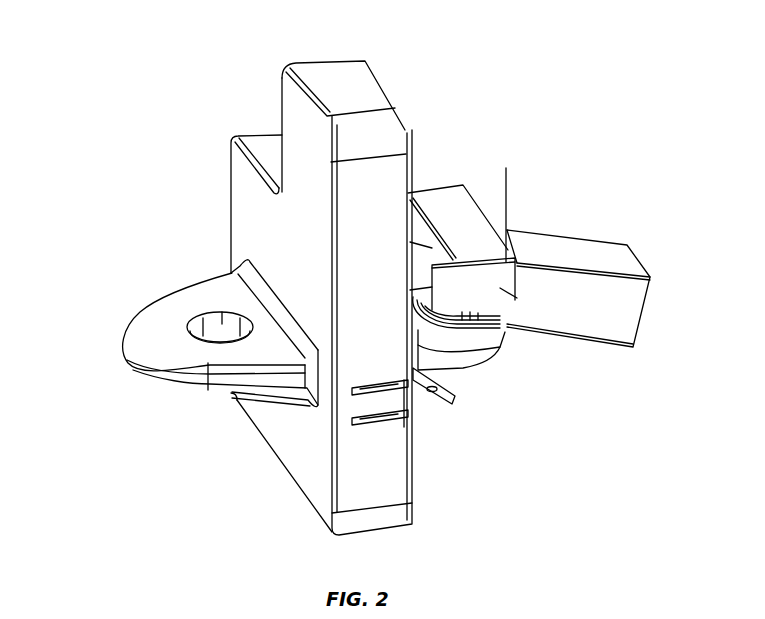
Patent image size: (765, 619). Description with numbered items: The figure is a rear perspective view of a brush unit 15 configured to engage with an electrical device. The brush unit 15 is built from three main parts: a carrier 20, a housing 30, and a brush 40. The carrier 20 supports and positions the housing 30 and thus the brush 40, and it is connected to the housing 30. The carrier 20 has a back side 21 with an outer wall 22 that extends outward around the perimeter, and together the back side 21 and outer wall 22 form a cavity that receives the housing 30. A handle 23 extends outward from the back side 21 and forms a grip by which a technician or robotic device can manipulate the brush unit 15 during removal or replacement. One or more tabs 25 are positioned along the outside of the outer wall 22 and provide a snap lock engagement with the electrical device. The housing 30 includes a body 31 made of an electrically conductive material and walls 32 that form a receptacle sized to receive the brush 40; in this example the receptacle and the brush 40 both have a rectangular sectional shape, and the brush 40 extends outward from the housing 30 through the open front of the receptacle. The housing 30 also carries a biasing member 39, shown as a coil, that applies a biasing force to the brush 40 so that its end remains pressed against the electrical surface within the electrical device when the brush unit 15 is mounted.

The brush unit 15 is at (88, 186).
The carrier 20 is at (330, 78).
The back side 21 is at (260, 230).
The outer wall 22 is at (378, 490).
The handle 23 is at (172, 372).
The tabs 25 is at (386, 405).
The housing 30 is at (433, 190).
The body 31 is at (500, 293).
The walls 32 is at (463, 222).
The biasing member 39 is at (478, 345).
The brush 40 is at (612, 315).